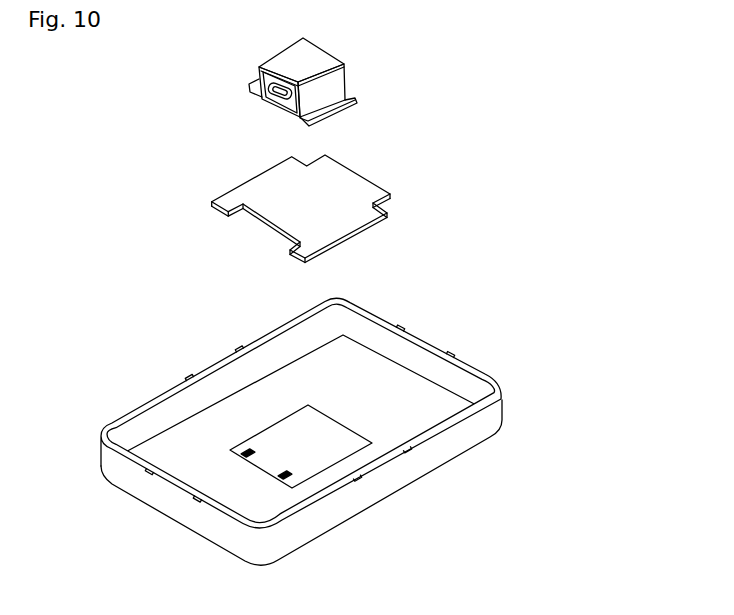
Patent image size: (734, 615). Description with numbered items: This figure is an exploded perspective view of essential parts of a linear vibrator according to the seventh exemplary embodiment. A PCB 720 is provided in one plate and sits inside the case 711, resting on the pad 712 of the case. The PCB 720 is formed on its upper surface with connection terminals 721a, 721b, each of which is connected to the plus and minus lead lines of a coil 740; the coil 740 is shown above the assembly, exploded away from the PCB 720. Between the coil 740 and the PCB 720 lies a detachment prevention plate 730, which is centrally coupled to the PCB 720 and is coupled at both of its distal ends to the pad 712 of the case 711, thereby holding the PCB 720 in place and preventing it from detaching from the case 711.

The housing body 711 is at (333, 455).
The pad 712 is at (413, 414).
The PCB 720 is at (310, 453).
The connection terminal 721a is at (244, 457).
The connection terminal 721b is at (283, 481).
The detachment prevention plate 730 is at (373, 185).
The coil 740 is at (272, 100).